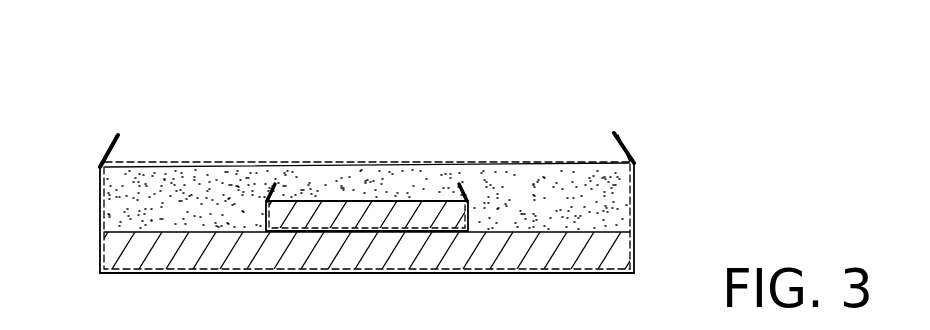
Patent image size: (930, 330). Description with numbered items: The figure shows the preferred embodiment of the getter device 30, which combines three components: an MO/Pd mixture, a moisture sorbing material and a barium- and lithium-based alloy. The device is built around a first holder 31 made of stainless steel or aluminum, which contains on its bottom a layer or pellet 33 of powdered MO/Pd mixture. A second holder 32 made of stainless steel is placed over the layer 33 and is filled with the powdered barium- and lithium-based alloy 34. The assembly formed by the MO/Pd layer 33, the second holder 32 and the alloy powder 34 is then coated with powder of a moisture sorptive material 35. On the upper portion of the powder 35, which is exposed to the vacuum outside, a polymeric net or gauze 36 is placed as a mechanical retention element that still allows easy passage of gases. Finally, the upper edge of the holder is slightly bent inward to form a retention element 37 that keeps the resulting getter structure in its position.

The getter device 30 is at (396, 204).
The first holder 31 is at (305, 273).
The second holder 32 is at (469, 203).
The layer of powdered mixture MO/Pd 33 is at (178, 258).
The barium- and lithium-based alloy 34 is at (380, 205).
The moisture sorptive material 35 is at (118, 200).
The gauze 36 is at (300, 161).
The retention element 37 is at (622, 143).